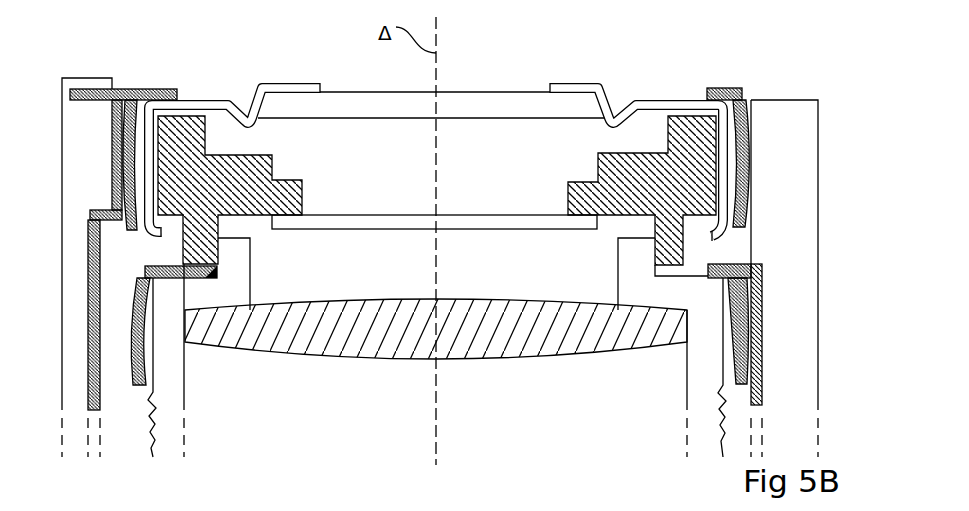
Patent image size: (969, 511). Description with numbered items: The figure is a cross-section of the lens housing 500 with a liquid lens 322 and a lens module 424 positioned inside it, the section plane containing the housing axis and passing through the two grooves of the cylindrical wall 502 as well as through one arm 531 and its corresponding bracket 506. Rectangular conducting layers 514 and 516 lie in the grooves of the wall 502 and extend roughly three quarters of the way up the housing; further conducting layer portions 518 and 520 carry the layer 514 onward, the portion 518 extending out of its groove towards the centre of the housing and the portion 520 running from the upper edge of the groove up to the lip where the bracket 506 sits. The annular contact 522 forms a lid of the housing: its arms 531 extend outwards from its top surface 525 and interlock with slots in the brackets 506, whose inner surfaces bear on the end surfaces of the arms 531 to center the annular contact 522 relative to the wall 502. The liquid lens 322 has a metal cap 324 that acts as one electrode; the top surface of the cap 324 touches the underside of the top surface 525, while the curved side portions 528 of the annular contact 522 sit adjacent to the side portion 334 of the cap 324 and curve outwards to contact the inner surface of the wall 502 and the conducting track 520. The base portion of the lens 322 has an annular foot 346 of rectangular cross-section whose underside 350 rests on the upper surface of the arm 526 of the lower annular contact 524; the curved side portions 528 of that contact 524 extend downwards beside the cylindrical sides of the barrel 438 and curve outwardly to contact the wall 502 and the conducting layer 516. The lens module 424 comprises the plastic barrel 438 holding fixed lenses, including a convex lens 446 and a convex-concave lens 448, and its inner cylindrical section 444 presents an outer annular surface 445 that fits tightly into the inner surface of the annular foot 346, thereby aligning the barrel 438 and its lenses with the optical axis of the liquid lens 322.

The lens housing 500 is at (788, 60).
The cylindrical wall 502 is at (797, 160).
The bracket 506 is at (72, 84).
The conducting layer 514 is at (88, 317).
The conducting layer 516 is at (763, 307).
The conducting layer portion 518 is at (103, 205).
The conducting layer portion 520 is at (112, 142).
The annular contact 522 is at (745, 95).
The annular contact 524 is at (722, 264).
The top surface 525 is at (723, 88).
The arm 526 is at (190, 236).
The curved side portion 528 is at (752, 173).
The arm 531 is at (85, 89).
The liquid lens 322 is at (450, 93).
The metal cap 324 is at (610, 124).
The side portion 334 is at (735, 150).
The annular foot 346 is at (653, 232).
The underside 350 is at (218, 222).
The lens module 424 is at (350, 301).
The barrel 438 is at (249, 289).
The inner cylindrical section 444 is at (240, 253).
The outer annular surface 445 is at (650, 250).
The convex lens 446 is at (472, 322).
The convex-concave lens 448 is at (653, 223).